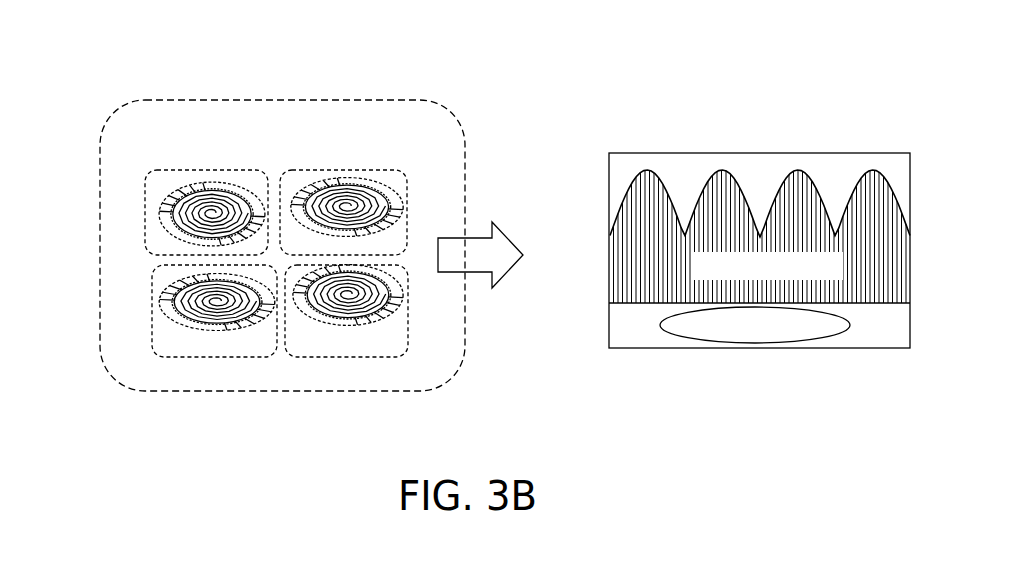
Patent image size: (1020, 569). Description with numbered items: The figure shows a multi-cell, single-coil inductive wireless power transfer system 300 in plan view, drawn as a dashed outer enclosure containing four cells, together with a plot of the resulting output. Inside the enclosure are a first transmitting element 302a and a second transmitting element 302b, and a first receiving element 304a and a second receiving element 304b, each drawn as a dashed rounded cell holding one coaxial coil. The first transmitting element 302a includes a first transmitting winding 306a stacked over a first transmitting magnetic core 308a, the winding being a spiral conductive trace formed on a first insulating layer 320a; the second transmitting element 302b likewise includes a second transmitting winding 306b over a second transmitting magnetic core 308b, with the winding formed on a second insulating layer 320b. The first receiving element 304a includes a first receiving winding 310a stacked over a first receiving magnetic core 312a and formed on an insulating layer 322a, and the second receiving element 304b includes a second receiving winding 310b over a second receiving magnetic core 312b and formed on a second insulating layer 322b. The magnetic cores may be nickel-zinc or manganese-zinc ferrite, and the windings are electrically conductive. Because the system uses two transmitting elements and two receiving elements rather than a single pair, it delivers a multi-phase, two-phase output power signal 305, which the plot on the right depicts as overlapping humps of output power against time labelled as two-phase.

The multi-cell, single-coil inductive wireless power transfer system 300 is at (148, 99).
The first transmitting element 302a is at (207, 168).
The second transmitting element 302b is at (342, 167).
The first receiving element 304a is at (208, 357).
The second receiving element 304b is at (343, 357).
The first transmitting winding 306a is at (183, 200).
The second transmitting winding 306b is at (313, 188).
The first transmitting magnetic core 308a is at (160, 215).
The second transmitting magnetic core 308b is at (327, 227).
The first receiving winding 310a is at (206, 325).
The second receiving winding 310b is at (370, 310).
The first receiving magnetic core 312a is at (162, 303).
The second receiving magnetic core 312b is at (360, 318).
The first insulating layer 320a is at (222, 193).
The second insulating layer 320b is at (377, 190).
The insulating layer 322a is at (172, 305).
The second insulating layer 322b is at (318, 308).
The multi-phase power signal 305 is at (734, 181).